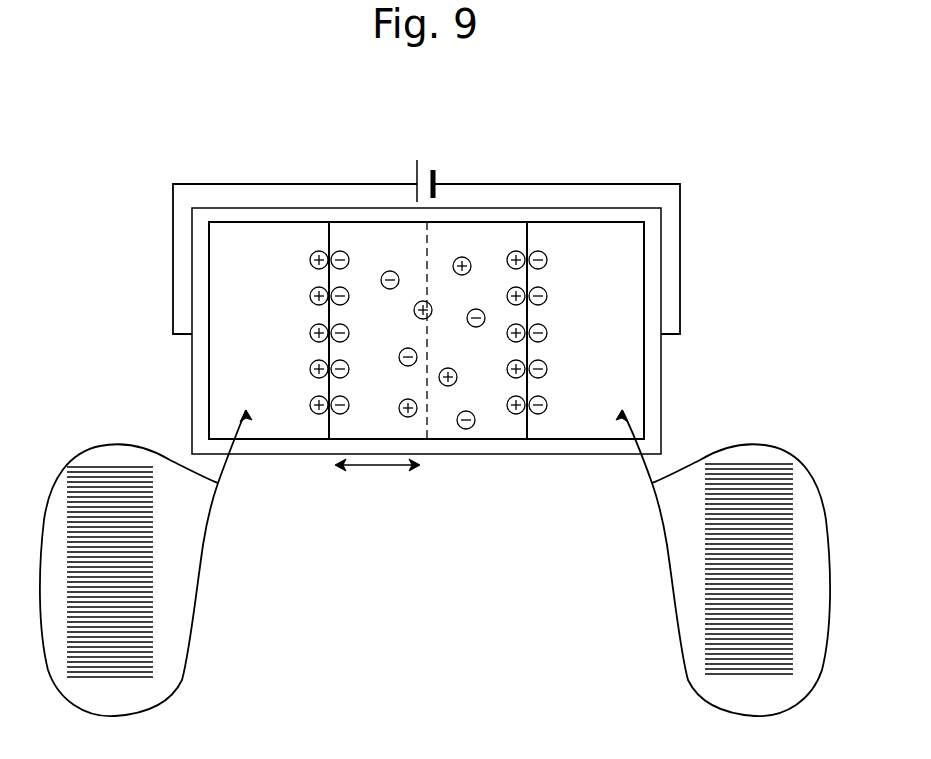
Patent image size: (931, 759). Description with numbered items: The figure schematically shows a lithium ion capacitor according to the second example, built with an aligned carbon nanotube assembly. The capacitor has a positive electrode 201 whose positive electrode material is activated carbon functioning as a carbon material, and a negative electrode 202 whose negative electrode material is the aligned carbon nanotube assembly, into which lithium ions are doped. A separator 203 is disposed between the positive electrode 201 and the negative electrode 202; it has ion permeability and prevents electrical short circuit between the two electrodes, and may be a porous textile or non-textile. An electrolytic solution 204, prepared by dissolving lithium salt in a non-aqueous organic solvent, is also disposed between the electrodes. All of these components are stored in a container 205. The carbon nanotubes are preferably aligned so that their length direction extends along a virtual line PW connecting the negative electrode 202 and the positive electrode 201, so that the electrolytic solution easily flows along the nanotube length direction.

The positive electrode 201 is at (270, 432).
The negative electrode 202 is at (595, 425).
The separator 203 is at (441, 432).
The electrolytic solution 204 is at (452, 430).
The container 205 is at (662, 372).
The virtual line PW is at (378, 470).